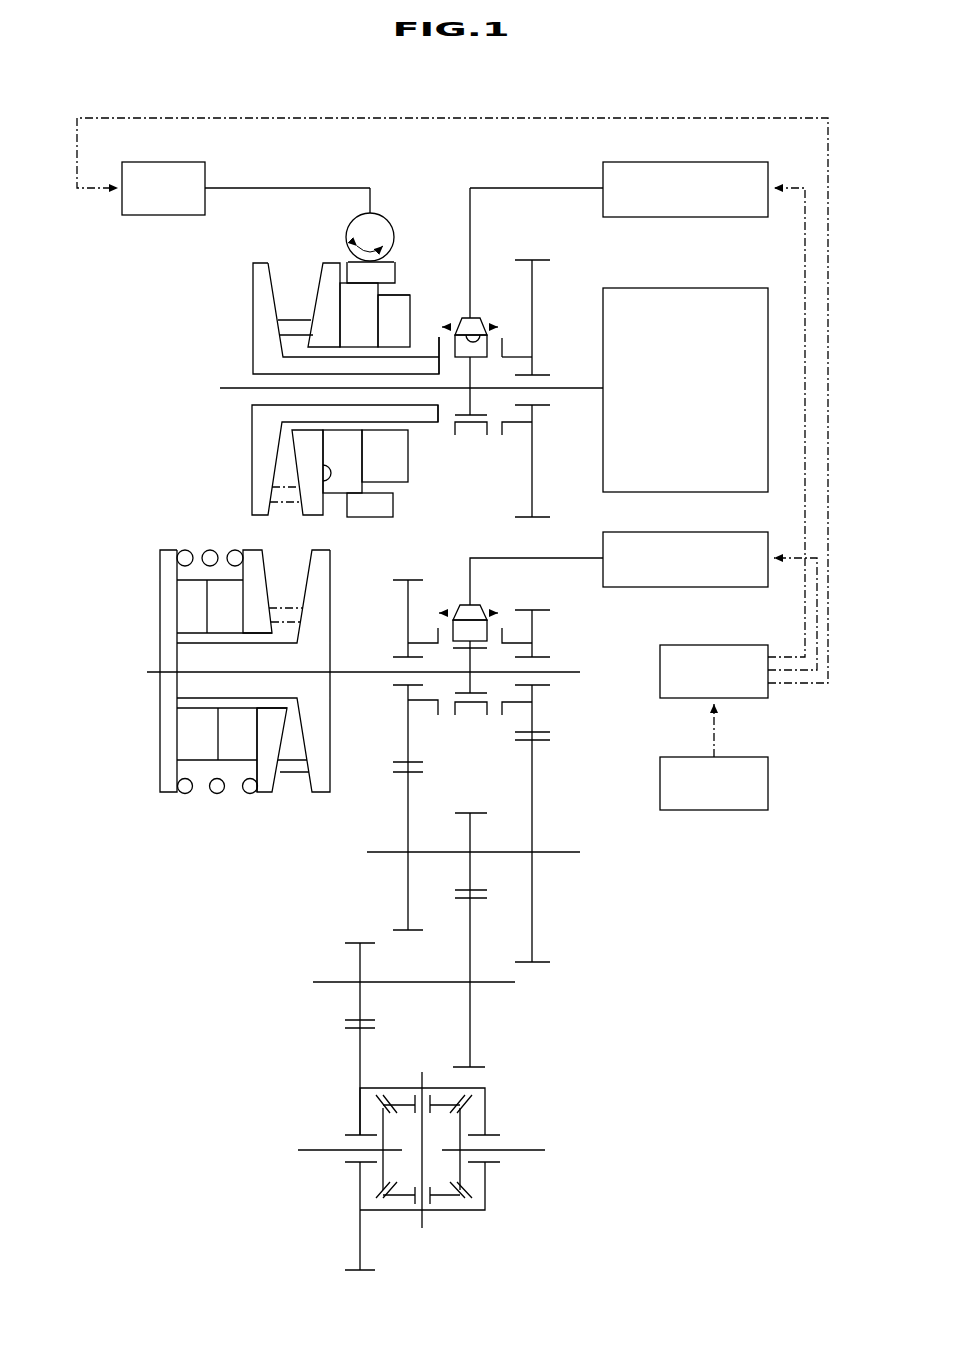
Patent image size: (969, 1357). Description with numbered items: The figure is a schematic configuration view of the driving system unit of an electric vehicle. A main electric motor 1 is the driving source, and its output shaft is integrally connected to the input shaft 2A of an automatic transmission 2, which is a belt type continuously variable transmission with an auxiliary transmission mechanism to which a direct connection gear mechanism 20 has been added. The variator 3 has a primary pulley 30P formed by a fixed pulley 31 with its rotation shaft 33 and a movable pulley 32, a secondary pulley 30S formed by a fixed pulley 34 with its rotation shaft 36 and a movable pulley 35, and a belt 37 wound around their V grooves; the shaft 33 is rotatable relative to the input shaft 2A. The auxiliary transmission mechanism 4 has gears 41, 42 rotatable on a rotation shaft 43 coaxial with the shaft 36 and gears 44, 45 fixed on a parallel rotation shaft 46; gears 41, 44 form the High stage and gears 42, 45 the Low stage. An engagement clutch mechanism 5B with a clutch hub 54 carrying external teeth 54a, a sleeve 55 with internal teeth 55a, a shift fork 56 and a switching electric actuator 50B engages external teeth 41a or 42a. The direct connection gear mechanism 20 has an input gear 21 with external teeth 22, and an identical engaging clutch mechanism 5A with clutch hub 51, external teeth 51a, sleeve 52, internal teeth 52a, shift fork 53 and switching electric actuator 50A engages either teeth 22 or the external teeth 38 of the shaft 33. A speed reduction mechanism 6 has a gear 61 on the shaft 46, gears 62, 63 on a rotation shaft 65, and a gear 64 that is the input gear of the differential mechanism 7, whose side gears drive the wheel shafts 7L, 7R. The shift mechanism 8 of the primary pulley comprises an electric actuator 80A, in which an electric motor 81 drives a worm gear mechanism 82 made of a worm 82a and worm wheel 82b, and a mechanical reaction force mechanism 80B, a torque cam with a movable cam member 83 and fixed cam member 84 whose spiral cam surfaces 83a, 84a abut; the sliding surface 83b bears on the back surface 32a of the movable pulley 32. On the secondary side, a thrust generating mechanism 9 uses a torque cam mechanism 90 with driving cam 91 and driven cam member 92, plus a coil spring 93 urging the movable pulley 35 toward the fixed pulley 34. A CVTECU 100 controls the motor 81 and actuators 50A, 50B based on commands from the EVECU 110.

The main electric motor 1 is at (690, 287).
The automatic transmission 2 is at (512, 175).
The input shaft 2A is at (565, 391).
The belt type continuously variable transmission mechanism 3 is at (440, 200).
The auxiliary transmission mechanism 4 is at (573, 767).
The engaging clutch mechanism 5A is at (460, 312).
The engagement clutch mechanism 5B is at (450, 556).
The speed reduction mechanism 6 is at (550, 1002).
The differential mechanism 7 is at (527, 1100).
The wheel shaft 7L is at (313, 1152).
The wheel shaft 7R is at (530, 1152).
The shift mechanism 8 is at (386, 209).
The thrust generating mechanism 9 is at (195, 815).
The direct connection gear mechanism 20 is at (553, 250).
The input gear 21 is at (535, 293).
The external teeth 22 is at (503, 343).
The primary pulley 30P is at (287, 250).
The secondary pulley 30S is at (297, 802).
The fixed pulley 31 is at (262, 261).
The movable pulley 32 is at (322, 287).
The back surface 32a is at (322, 482).
The rotation shaft 33 is at (404, 368).
The fixed pulley 34 is at (324, 563).
The movable pulley 35 is at (258, 570).
The rotation shaft 36 is at (190, 660).
The belt 37 is at (285, 493).
The external teeth 38 is at (438, 348).
The gear 41 is at (405, 603).
The external teeth 41a is at (437, 638).
The gear 42 is at (537, 623).
The external teeth 42a is at (501, 631).
The rotation shaft 43 is at (564, 675).
The gear 44 is at (410, 790).
The gear 45 is at (535, 790).
The rotation shaft 46 is at (561, 855).
The switching electric actuator 50A is at (737, 218).
The switching electric actuator 50B is at (688, 590).
The clutch hub 51 is at (471, 356).
The external teeth 51a is at (505, 352).
The sleeve 52 is at (476, 318).
The internal teeth 52a is at (478, 324).
The shift fork 53 is at (473, 229).
The clutch hub 54 is at (461, 609).
The external teeth 54a is at (436, 638).
The sleeve 55 is at (479, 612).
The internal teeth 55a is at (483, 625).
The shift fork 56 is at (571, 557).
The gear 61 is at (473, 835).
The gear 62 is at (473, 1000).
The gear 63 is at (363, 1000).
The gear 64 is at (358, 1063).
The rotation shaft 65 is at (437, 985).
The electric actuator 80A is at (366, 182).
The mechanical reaction force mechanism 80B is at (401, 290).
The electric motor 81 is at (160, 216).
The worm gear mechanism 82 is at (332, 216).
The worm 82a is at (366, 216).
The worm wheel 82b is at (386, 272).
The cam member 83 is at (353, 312).
The cam surface 83a is at (365, 442).
The sliding surface 83b is at (322, 452).
The cam member 84 is at (407, 308).
The cam surface 84a is at (360, 475).
The torque cam mechanism 90 is at (204, 770).
The driving cam 91 is at (230, 720).
The driven cam member 92 is at (187, 738).
The coil spring 93 is at (217, 794).
The CVTECU 100 is at (740, 645).
The EVECU 110 is at (769, 781).